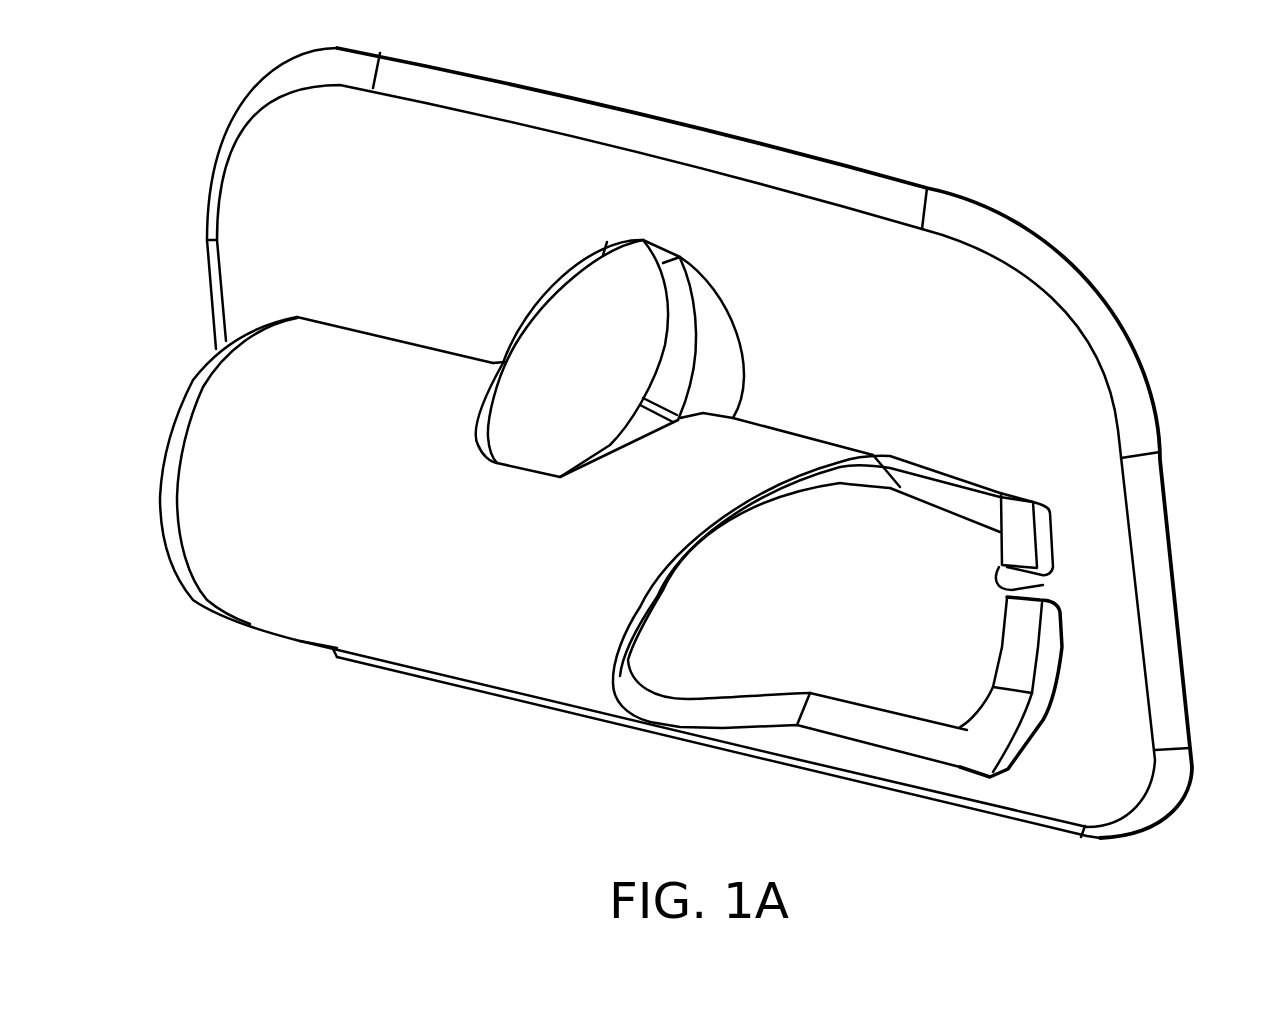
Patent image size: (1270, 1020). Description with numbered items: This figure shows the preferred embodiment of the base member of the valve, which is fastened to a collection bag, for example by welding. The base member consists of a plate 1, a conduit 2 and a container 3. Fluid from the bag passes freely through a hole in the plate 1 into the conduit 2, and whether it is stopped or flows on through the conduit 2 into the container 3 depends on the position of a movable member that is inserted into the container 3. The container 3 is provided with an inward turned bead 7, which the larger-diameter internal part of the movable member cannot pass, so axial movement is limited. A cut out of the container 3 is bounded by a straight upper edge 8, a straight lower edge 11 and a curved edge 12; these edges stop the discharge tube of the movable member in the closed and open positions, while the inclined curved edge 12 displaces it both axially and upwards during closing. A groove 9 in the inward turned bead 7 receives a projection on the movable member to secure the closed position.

The plate 1 is at (699, 443).
The conduit 2 is at (610, 358).
The container 3 is at (248, 482).
The inward turned bead 7 is at (1011, 687).
The upper edge 8 is at (938, 492).
The groove 9 is at (1032, 587).
The lower edge 11 is at (855, 722).
The curved edge 12 is at (661, 592).